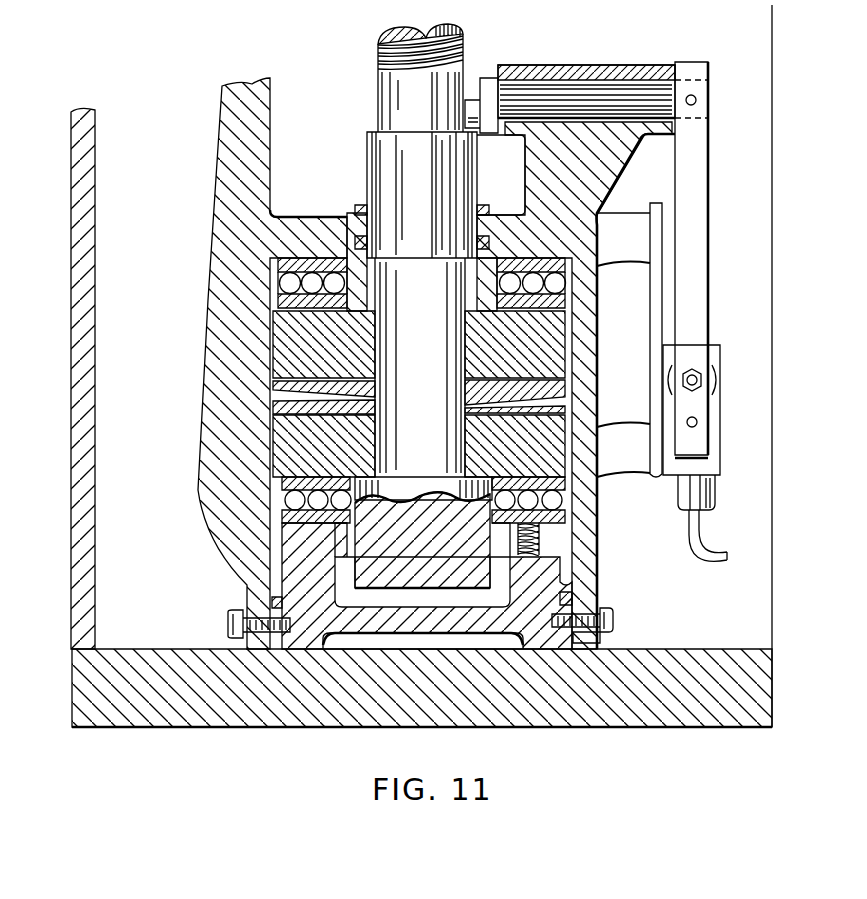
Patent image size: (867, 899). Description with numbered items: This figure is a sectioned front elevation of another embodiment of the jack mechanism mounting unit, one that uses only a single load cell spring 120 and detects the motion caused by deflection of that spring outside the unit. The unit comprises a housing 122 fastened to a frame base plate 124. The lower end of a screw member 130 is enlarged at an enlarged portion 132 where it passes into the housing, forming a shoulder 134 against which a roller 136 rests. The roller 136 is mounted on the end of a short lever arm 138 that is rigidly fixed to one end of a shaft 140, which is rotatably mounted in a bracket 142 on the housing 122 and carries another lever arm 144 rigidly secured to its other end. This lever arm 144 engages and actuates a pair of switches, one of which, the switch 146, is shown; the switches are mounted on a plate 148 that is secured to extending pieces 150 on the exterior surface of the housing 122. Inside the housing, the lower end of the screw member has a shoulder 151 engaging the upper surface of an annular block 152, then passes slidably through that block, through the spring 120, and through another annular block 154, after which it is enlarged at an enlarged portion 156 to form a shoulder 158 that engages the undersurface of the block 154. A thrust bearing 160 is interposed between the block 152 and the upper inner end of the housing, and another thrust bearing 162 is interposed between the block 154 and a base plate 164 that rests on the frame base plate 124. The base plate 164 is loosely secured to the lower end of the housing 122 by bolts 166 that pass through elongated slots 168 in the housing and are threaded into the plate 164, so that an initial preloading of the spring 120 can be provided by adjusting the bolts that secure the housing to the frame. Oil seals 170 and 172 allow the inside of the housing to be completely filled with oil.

The load cell spring 120 is at (275, 398).
The housing 122 is at (264, 241).
The frame base plate 124 is at (163, 728).
The screw member 130 is at (378, 58).
The enlarged portion of screw member 132 is at (394, 156).
The shoulder 134 is at (372, 136).
The roller 136 is at (472, 104).
The short lever arm 138 is at (496, 97).
The shaft 140 is at (603, 93).
The bracket 142 is at (606, 137).
The lever arm 144 is at (697, 167).
The switch 146 is at (715, 355).
The plate 148 is at (655, 287).
The extending pieces 150 is at (613, 428).
The shoulder 151 is at (404, 262).
The annular block 152 is at (282, 345).
The annular block 154 is at (285, 441).
The enlarged portion 156 is at (376, 588).
The shoulder 158 is at (475, 473).
The thrust bearing 160 is at (313, 258).
The thrust bearing 162 is at (312, 523).
The base plate 164 is at (480, 638).
The bolts 166 is at (612, 622).
The elongated slots 168 is at (578, 606).
The oil seal 170 is at (478, 210).
The oil seal 172 is at (570, 588).